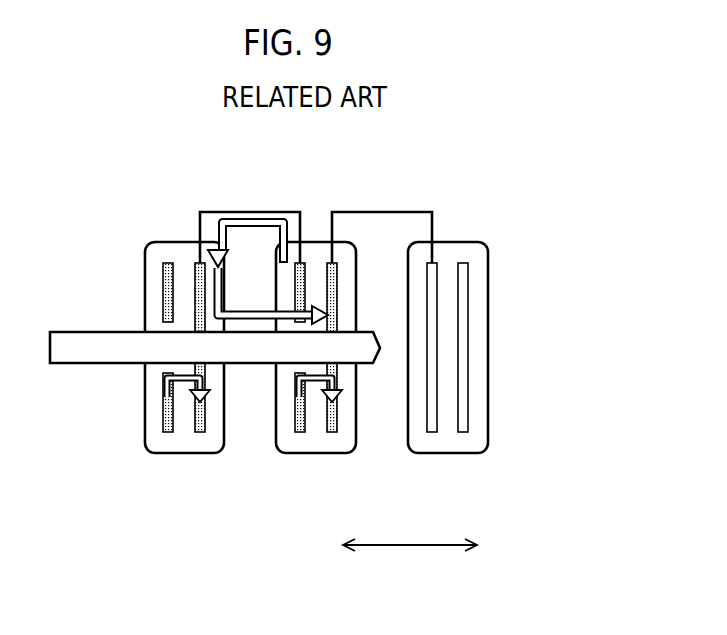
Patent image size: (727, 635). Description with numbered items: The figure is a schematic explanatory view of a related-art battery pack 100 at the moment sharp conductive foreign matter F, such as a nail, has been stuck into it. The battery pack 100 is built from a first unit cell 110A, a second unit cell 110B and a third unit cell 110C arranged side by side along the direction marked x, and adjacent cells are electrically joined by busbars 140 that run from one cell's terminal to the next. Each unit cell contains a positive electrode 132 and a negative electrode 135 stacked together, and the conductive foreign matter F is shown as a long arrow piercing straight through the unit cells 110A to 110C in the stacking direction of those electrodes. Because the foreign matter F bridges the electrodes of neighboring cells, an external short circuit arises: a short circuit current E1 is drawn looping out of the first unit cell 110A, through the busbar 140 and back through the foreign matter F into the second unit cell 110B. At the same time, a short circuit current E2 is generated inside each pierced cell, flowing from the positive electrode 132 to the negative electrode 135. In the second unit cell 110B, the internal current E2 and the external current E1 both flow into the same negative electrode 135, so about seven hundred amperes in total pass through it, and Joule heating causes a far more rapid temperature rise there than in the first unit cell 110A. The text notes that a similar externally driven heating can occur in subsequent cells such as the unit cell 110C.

The battery pack 100 is at (130, 208).
The first unit cell 110A is at (143, 430).
The second unit cell 110B is at (312, 457).
The third unit cell 110C is at (489, 421).
The positive electrode 132 is at (168, 433).
The negative electrode 135 is at (200, 433).
The busbar 140 is at (277, 210).
The conductive foreign matter F is at (67, 332).
The short circuit current of the external short circuit E1 is at (250, 217).
The short circuit current generated inside the second unit cell E2 is at (163, 387).
The x direction x is at (410, 557).